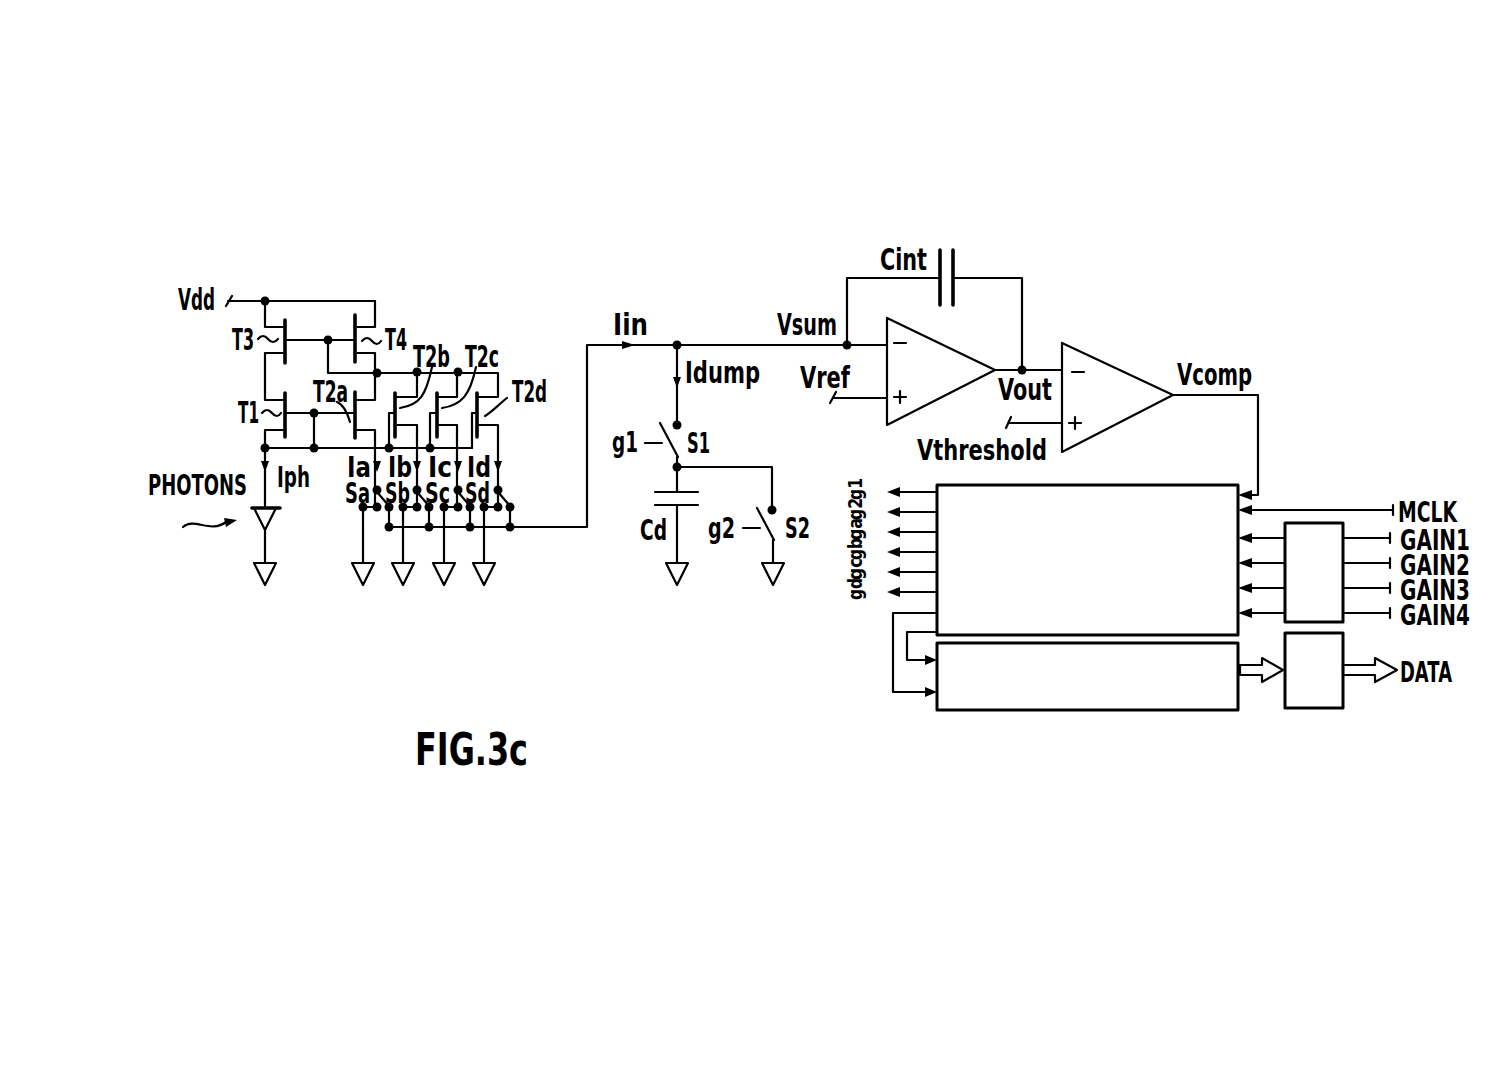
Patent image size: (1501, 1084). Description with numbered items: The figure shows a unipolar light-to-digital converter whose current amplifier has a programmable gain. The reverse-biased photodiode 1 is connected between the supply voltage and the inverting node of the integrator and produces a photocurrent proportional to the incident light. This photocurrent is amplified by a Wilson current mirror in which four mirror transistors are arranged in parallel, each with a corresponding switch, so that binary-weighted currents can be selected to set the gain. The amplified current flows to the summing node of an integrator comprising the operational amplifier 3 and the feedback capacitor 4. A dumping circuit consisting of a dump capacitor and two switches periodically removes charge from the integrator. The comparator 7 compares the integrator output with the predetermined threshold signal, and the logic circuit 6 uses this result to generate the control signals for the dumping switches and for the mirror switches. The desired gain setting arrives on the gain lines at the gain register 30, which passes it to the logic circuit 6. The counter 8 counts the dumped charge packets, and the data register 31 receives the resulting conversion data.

The photodiode 1 is at (279, 522).
The operational amplifier 3 is at (955, 350).
The capacitor 4 is at (953, 266).
The logic circuit 6 is at (1120, 484).
The comparator 7 is at (1115, 368).
The counter 8 is at (975, 711).
The gain register 30 is at (1315, 532).
The data register 31 is at (1311, 709).